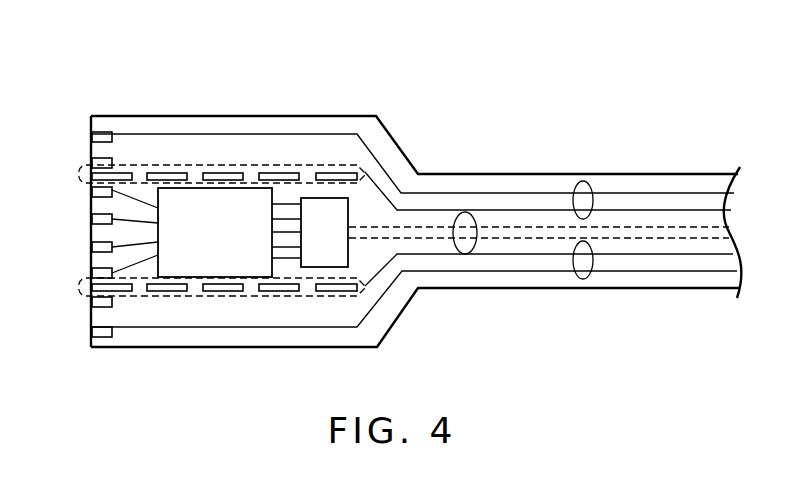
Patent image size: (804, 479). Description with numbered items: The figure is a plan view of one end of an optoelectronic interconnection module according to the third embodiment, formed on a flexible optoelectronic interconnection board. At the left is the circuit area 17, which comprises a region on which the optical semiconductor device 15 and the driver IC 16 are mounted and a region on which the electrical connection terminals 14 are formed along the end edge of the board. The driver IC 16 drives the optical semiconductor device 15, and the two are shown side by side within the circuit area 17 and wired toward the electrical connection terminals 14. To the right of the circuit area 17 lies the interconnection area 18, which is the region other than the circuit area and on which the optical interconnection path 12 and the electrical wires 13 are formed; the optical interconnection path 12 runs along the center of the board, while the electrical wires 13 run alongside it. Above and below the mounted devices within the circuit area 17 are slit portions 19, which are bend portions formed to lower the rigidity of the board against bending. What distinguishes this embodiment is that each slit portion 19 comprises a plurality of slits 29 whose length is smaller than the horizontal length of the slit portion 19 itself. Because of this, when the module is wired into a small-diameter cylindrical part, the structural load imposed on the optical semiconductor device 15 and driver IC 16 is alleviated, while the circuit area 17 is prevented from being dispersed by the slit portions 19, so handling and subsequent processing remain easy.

The optical interconnection path 12 is at (472, 248).
The electrical wires 13 is at (593, 200).
The electrical connection terminals 14 is at (80, 118).
The optical semiconductor device 15 is at (325, 255).
The driver IC 16 is at (223, 267).
The circuit area 17 is at (92, 100).
The interconnection area 18 is at (427, 100).
The slit portion 19 is at (136, 184).
The slits 29 is at (223, 172).